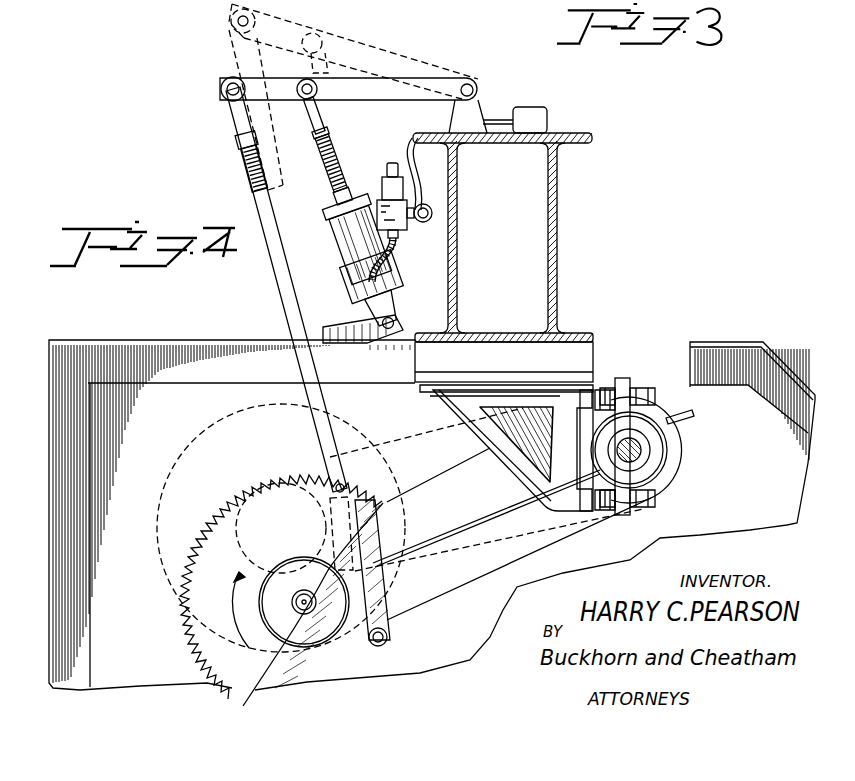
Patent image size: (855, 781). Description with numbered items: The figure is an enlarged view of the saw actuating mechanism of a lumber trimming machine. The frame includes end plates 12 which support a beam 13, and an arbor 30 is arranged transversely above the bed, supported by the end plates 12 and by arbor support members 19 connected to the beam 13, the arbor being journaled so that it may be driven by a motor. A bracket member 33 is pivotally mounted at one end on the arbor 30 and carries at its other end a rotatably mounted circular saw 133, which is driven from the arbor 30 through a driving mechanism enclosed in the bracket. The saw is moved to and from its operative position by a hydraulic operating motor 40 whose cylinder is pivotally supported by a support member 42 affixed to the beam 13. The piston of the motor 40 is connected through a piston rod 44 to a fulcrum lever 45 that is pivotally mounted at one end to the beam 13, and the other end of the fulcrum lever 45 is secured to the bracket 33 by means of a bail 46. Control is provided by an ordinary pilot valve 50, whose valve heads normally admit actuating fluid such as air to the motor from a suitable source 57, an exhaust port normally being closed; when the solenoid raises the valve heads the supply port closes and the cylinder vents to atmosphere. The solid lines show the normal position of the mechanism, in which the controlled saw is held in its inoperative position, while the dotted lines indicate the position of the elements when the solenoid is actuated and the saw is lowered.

The end plates 12 is at (97, 345).
The beam 13 is at (557, 205).
The arbor support members 19 is at (437, 393).
The arbor 30 is at (640, 450).
The bracket member 33 is at (407, 437).
The hydraulic operating motor 40 is at (348, 245).
The support member 42 is at (386, 340).
The piston rod 44 is at (306, 62).
The fulcrum lever 45 is at (338, 50).
The bail 46 is at (273, 166).
The pilot valve 50 is at (401, 228).
The source 57 is at (429, 208).
The saw 133 is at (170, 568).